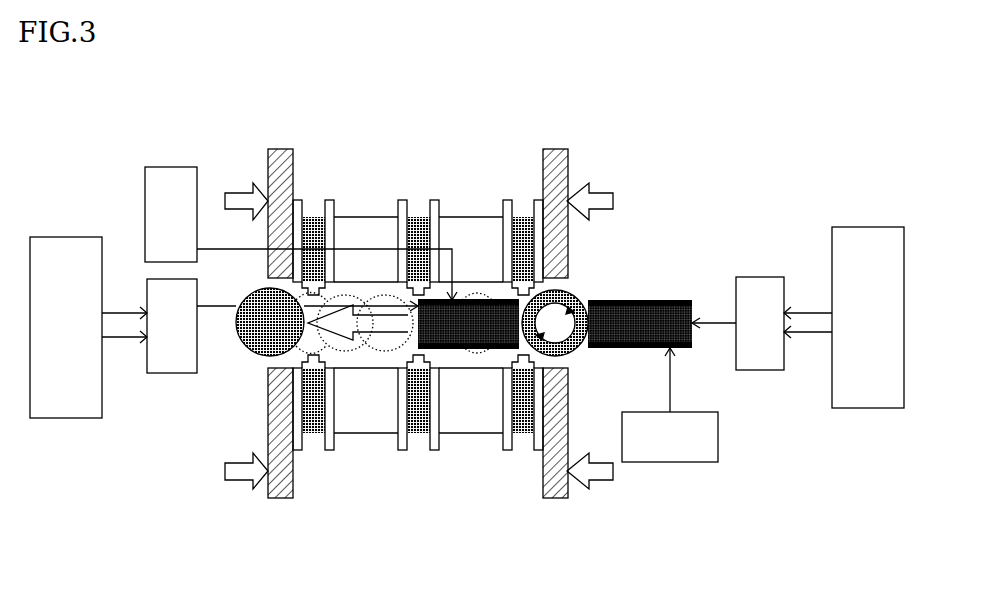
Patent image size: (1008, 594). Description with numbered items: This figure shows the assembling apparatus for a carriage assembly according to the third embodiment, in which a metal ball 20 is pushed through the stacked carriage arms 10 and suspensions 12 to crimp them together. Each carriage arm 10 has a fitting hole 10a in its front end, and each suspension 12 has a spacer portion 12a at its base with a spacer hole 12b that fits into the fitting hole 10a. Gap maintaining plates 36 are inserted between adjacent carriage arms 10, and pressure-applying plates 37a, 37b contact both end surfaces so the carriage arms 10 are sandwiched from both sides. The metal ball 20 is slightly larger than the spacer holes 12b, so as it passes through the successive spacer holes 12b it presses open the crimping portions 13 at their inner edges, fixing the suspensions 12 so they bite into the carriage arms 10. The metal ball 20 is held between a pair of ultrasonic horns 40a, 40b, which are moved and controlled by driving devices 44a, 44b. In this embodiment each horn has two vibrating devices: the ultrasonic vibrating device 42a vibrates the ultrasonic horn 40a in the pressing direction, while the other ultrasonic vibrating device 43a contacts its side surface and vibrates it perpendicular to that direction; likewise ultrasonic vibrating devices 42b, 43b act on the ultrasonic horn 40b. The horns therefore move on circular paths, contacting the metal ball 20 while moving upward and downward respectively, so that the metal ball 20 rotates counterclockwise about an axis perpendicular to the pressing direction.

The carriage arm 10 is at (418, 232).
The fitting hole 10a is at (517, 348).
The suspension 12 is at (402, 202).
The spacer portion 12a is at (435, 417).
The spacer hole 12b is at (400, 350).
The crimping portion 13 is at (300, 295).
The metal ball 20 is at (570, 293).
The gap maintaining plate 36 is at (475, 232).
The pressure-applying plate 37a is at (552, 150).
The pressure-applying plate 37b is at (280, 150).
The ultrasonic horn 40a is at (648, 302).
The ultrasonic horn 40b is at (457, 350).
The ultrasonic vibrating device 42a is at (757, 292).
The ultrasonic vibrating device 42b is at (170, 368).
The ultrasonic vibrating device 43a is at (710, 448).
The ultrasonic vibrating device 43b is at (172, 178).
The driving device 44a is at (858, 238).
The driving device 44b is at (73, 253).